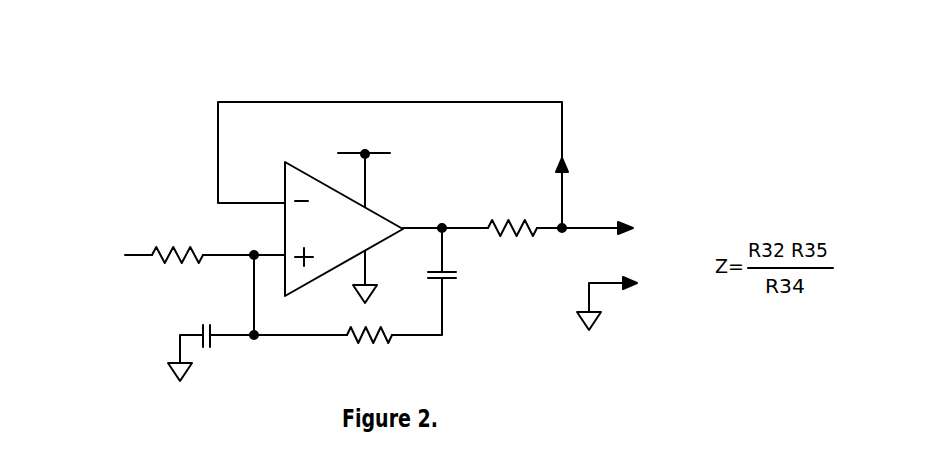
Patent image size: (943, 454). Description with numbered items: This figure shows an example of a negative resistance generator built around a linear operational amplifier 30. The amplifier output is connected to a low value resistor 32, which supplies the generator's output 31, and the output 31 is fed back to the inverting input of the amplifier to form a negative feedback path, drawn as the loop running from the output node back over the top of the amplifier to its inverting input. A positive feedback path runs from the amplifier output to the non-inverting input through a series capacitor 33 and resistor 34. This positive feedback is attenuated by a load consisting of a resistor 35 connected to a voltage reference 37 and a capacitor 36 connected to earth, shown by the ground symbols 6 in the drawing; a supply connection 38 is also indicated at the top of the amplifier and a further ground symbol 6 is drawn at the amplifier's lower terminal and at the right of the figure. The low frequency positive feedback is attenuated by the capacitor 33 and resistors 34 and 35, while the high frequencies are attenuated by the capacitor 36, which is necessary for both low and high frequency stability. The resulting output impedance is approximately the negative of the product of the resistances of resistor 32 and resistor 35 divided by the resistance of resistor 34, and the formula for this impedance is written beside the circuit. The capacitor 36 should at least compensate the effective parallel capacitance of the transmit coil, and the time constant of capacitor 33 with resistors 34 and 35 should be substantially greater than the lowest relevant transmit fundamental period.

The linear operational amplifier 30 is at (344, 229).
The output 31 is at (634, 228).
The low value resistor 32 is at (508, 220).
The series capacitor 33 is at (450, 278).
The resistor 34 is at (388, 337).
The resistor 35 is at (163, 250).
The capacitor 36 is at (200, 330).
The voltage reference 37 is at (125, 256).
The power supply 38 is at (371, 148).
The ground 6 is at (172, 372).